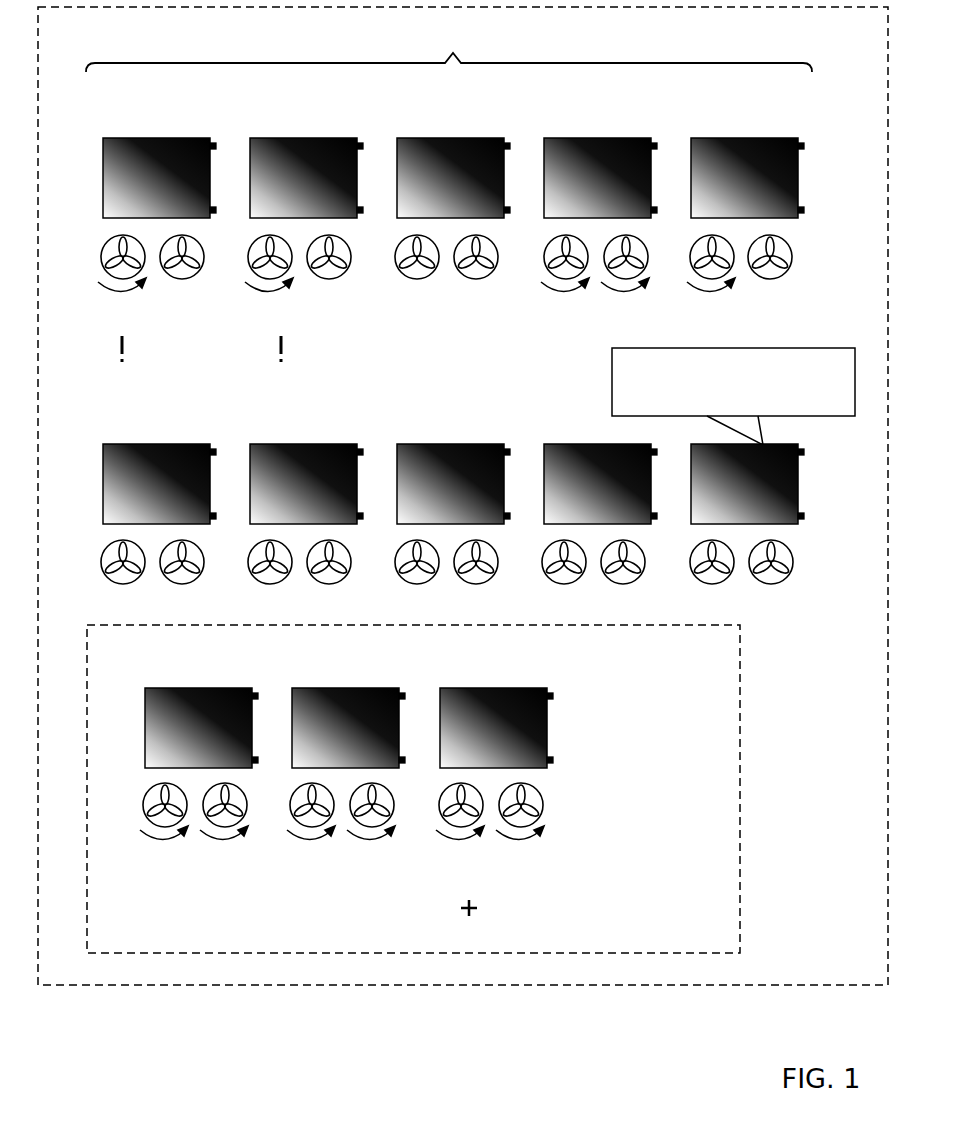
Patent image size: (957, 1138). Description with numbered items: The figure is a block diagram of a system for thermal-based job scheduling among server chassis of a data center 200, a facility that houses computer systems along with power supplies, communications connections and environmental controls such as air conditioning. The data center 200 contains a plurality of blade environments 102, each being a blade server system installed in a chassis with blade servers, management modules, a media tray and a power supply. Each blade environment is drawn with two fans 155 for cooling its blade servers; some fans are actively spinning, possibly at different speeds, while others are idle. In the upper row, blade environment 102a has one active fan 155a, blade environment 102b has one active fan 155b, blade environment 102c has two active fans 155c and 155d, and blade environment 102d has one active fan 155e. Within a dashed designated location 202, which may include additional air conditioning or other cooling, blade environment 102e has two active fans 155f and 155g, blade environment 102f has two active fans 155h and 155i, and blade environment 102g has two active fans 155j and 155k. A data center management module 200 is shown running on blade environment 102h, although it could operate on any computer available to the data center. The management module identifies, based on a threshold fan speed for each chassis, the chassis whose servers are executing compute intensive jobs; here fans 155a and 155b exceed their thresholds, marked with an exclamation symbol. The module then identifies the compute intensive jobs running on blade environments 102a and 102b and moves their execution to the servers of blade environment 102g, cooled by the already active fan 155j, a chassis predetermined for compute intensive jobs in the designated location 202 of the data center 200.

The blade environments 102 is at (449, 276).
The blade environment 102a is at (159, 156).
The blade environment 102b is at (306, 156).
The blade environment 102c is at (600, 156).
The blade environment 102d is at (747, 156).
The blade environment 102e is at (201, 710).
The blade environment 102f is at (348, 710).
The blade environment 102g is at (496, 710).
The blade environment 102h is at (783, 484).
The fans 155 is at (482, 408).
The active fan 155a is at (123, 298).
The active fan 155b is at (274, 298).
The active fan 155c is at (564, 282).
The active fan 155d is at (626, 282).
The active fan 155e is at (714, 282).
The active fan 155f is at (164, 833).
The active fan 155g is at (227, 833).
The active fan 155h is at (308, 833).
The active fan 155i is at (371, 833).
The active fan 155j is at (462, 833).
The active fan 155k is at (521, 833).
The data center 200 is at (463, 496).
The designated location 202 is at (413, 789).